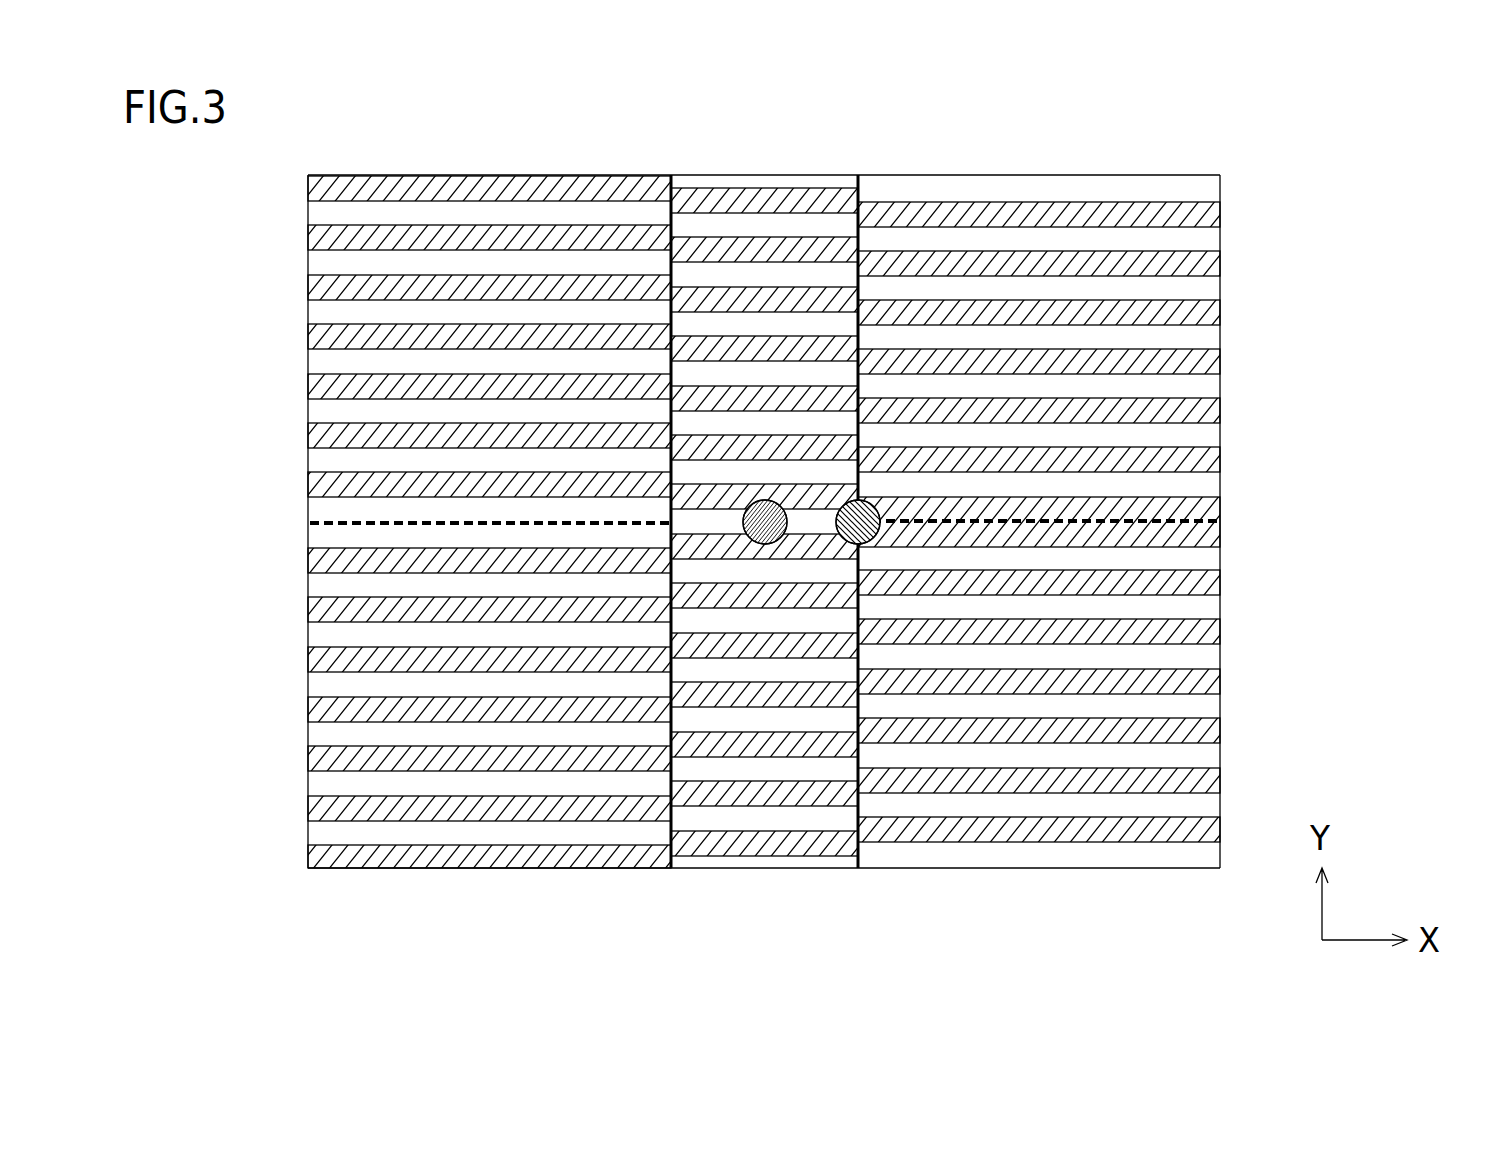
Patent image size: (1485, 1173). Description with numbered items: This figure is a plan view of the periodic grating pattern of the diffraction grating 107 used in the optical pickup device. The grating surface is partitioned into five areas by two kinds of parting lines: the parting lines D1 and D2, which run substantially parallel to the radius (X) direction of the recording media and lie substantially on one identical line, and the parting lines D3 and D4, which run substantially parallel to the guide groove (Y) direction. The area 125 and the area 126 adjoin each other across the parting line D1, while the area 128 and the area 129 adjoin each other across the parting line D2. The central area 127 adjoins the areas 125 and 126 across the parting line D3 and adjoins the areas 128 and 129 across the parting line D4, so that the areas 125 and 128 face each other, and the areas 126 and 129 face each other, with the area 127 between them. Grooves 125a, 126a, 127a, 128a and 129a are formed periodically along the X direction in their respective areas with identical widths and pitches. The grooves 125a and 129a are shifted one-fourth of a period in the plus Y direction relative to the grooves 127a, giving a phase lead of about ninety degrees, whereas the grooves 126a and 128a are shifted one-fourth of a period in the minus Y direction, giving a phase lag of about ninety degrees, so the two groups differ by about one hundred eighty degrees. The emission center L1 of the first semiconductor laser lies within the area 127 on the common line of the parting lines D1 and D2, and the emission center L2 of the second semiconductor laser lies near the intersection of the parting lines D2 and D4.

The diffraction grating 107 is at (1168, 148).
The area 125 is at (304, 175).
The grooves 125a is at (517, 187).
The area 126 is at (304, 522).
The grooves 126a is at (512, 862).
The area 127 is at (857, 171).
The grooves 127a is at (705, 848).
The area 128 is at (1224, 175).
The grooves 128a is at (1030, 205).
The area 129 is at (1224, 522).
The grooves 129a is at (1022, 843).
The parting line D1 is at (313, 522).
The parting line D2 is at (1205, 503).
The parting line D3 is at (673, 823).
The parting line D4 is at (860, 848).
The emission center L1 is at (763, 544).
The emission center L2 is at (848, 544).